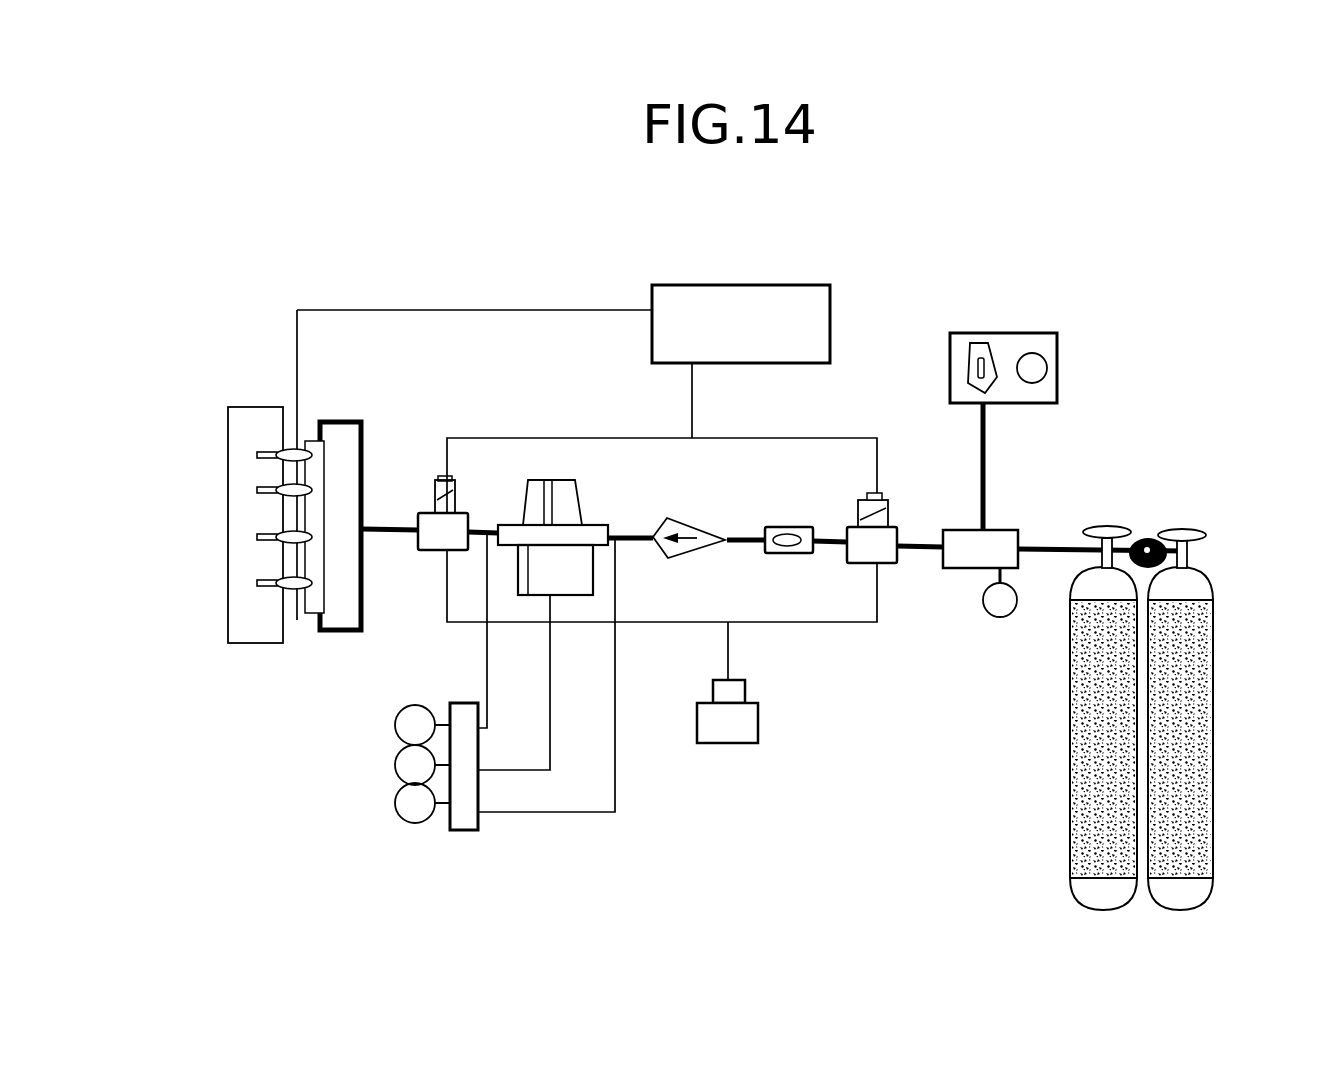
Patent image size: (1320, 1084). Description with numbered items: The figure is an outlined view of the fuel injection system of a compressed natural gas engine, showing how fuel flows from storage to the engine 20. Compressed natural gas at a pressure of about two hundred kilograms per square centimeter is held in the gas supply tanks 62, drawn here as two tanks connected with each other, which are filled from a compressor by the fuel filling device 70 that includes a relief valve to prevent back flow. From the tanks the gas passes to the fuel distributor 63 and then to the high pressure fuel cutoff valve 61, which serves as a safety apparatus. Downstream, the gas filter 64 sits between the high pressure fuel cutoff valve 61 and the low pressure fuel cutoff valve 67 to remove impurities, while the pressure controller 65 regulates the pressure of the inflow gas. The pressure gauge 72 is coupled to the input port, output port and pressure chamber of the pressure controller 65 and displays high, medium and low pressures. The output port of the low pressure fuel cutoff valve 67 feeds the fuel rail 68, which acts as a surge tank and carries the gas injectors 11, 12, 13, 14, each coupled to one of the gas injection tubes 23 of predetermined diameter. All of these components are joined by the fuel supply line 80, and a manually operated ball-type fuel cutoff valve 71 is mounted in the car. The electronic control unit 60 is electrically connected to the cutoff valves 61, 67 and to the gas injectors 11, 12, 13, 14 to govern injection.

The gas injector 11 is at (290, 447).
The gas injector 12 is at (287, 488).
The gas injector 13 is at (287, 535).
The gas injector 14 is at (287, 590).
The engine 20 is at (233, 517).
The gas injection tube 23 is at (262, 448).
The electronic control unit 60 is at (687, 284).
The high pressure fuel cutoff valve 61 is at (899, 519).
The gas supply tank 62 is at (1127, 785).
The fuel distributor 63 is at (990, 540).
The gas filter 64 is at (790, 528).
The pressure controller 65 is at (584, 516).
The low pressure fuel cutoff valve 67 is at (462, 508).
The fuel rail 68 is at (307, 614).
The fuel filling device 70 is at (1010, 326).
The manually operated ball-type fuel cutoff valve 71 is at (747, 722).
The pressure gauge 72 is at (395, 808).
The fuel supply line 80 is at (1058, 549).